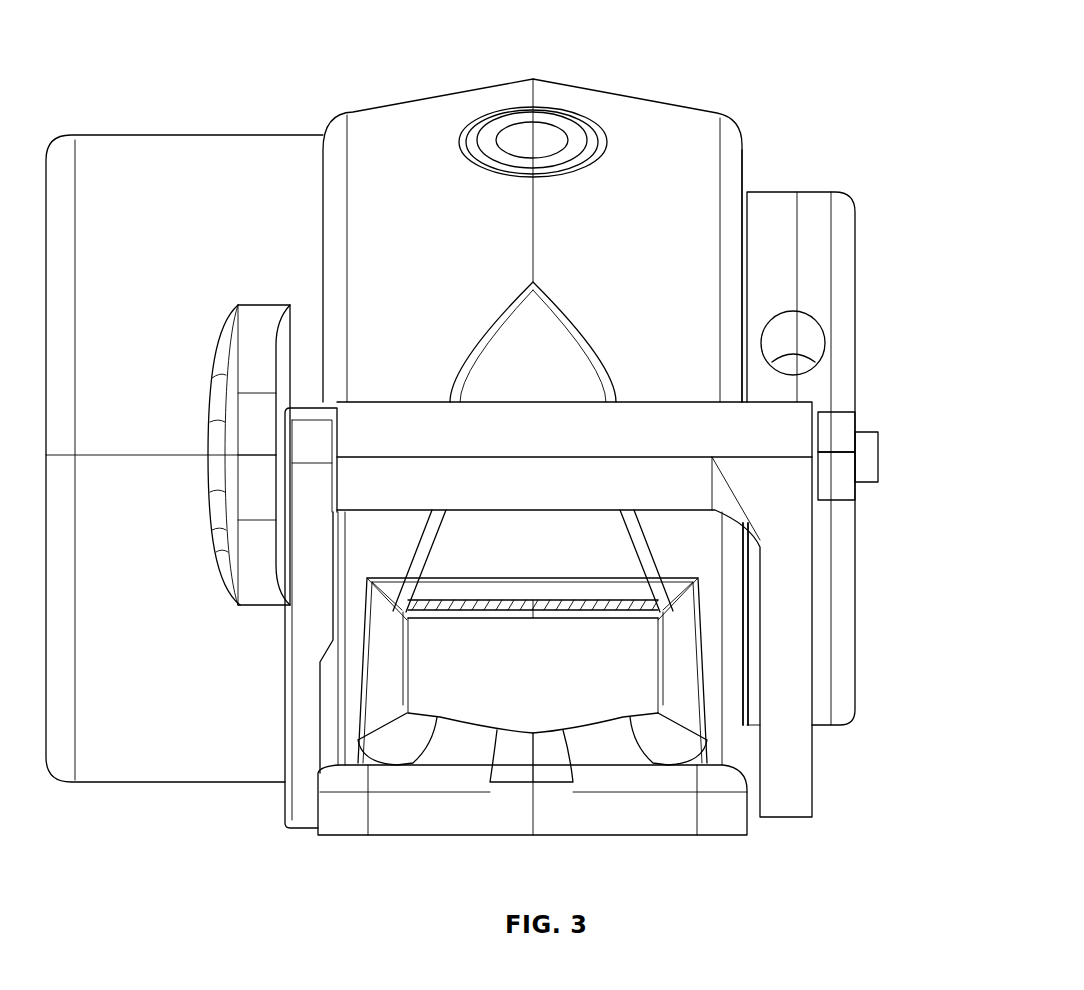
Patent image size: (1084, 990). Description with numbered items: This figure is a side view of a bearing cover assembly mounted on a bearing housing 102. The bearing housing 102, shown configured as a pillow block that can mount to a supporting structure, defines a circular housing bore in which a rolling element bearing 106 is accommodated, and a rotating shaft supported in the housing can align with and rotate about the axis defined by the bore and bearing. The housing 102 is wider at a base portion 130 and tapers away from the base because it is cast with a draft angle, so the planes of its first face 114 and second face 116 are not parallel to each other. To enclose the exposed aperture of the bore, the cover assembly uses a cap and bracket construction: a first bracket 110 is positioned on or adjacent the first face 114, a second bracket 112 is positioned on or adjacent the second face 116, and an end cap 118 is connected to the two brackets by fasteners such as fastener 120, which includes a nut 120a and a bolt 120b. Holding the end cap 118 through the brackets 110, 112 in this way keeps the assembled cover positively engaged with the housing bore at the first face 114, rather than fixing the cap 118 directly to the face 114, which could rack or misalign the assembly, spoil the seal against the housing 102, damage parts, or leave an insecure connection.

The bearing housing 102 is at (700, 143).
The rolling element bearing 106 is at (815, 300).
The first bracket 110 is at (313, 438).
The second bracket 112 is at (798, 808).
The first face 114 is at (280, 762).
The second face 116 is at (743, 178).
The end cap 118 is at (145, 762).
The fastener 120 is at (882, 468).
The nut 120a is at (840, 487).
The bolt 120b is at (867, 450).
The base portion 130 is at (672, 837).